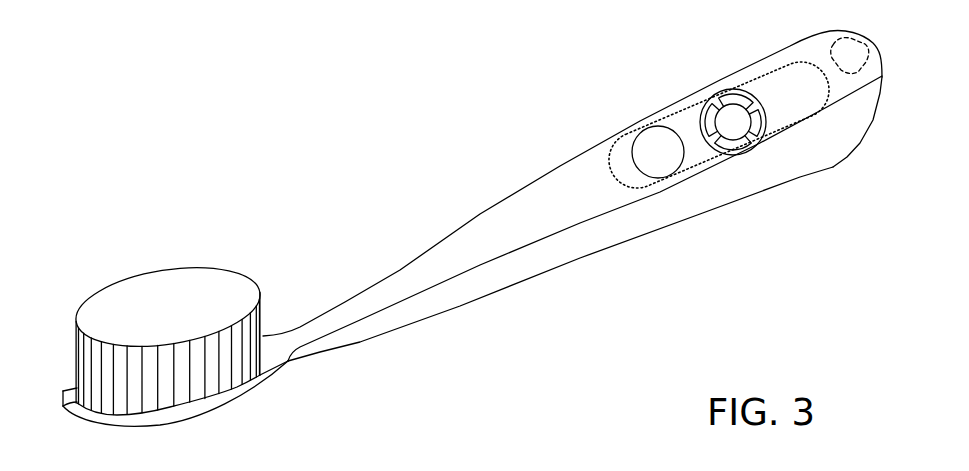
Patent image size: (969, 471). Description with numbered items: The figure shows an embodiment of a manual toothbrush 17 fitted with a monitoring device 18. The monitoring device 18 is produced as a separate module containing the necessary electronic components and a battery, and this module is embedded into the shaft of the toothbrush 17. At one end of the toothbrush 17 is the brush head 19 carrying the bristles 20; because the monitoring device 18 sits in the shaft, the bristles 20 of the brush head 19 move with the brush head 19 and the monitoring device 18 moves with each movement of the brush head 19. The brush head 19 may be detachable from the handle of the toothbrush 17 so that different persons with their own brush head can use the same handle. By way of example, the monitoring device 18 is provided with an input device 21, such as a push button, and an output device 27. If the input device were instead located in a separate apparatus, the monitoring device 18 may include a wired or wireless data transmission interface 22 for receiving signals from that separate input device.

The toothbrush 17 is at (389, 278).
The monitoring device 18 is at (675, 118).
The brush head 19 is at (248, 388).
The bristles 20 is at (78, 363).
The input device 21 is at (637, 143).
The data transmission interface 22 is at (847, 50).
The output device 27 is at (715, 106).